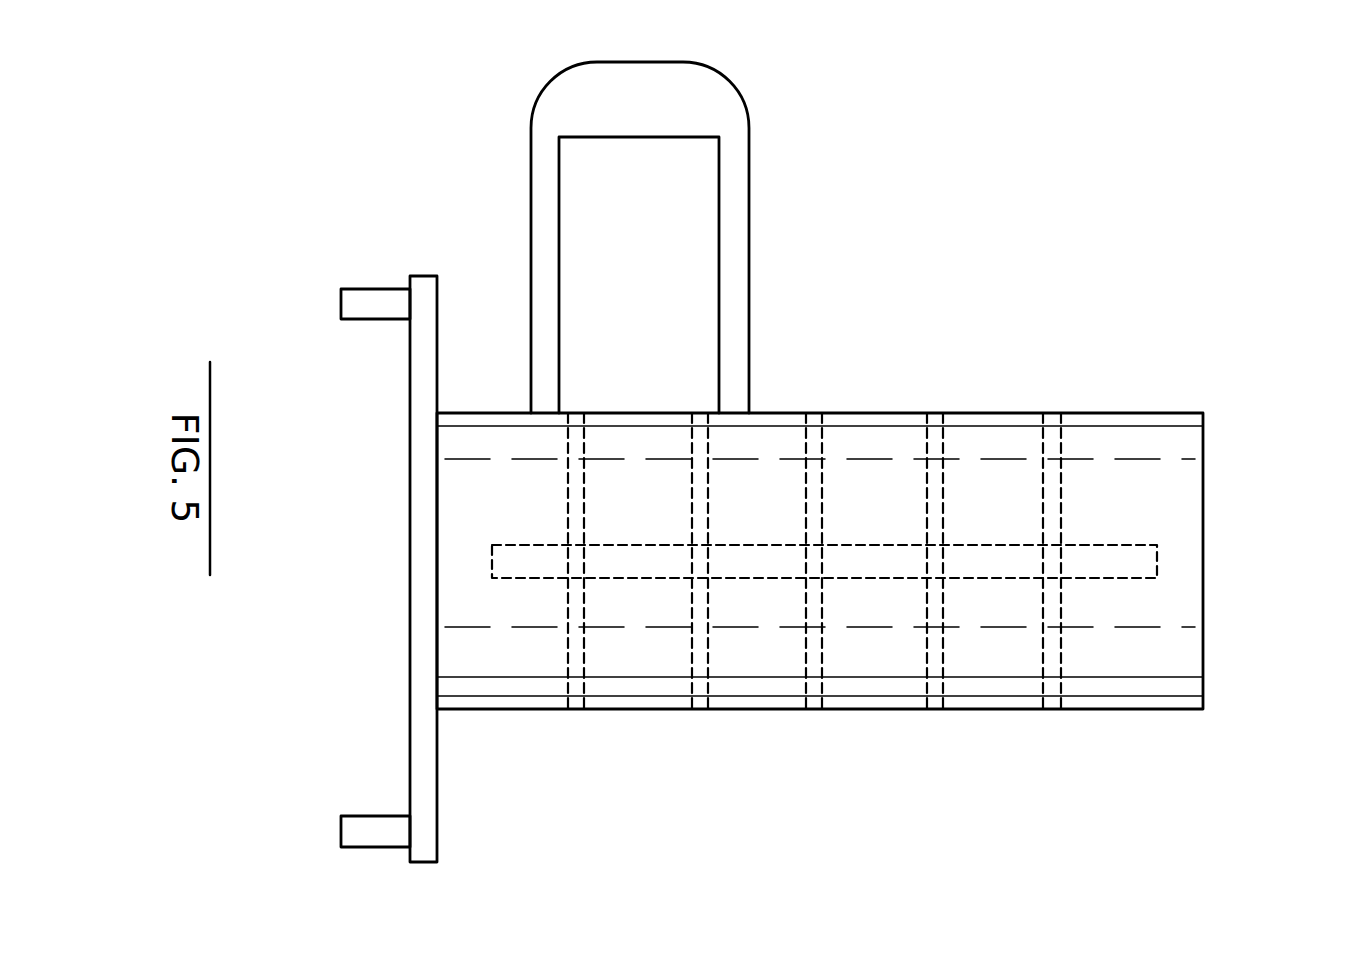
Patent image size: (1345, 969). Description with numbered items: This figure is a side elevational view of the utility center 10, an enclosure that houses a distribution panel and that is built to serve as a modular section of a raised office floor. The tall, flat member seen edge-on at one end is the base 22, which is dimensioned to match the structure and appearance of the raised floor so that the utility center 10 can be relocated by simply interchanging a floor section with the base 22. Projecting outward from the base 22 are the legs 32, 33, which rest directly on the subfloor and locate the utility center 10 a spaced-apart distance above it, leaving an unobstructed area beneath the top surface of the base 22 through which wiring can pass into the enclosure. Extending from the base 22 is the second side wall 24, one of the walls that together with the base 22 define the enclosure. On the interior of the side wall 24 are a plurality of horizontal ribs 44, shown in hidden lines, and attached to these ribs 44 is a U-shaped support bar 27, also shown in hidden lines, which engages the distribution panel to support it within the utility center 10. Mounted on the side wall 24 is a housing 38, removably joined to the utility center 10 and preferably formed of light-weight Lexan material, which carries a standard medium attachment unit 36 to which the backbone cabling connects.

The utility center 10 is at (1250, 313).
The base 22 is at (428, 777).
The second side wall 24 is at (1165, 690).
The U-shaped support bar 27 is at (1160, 572).
The leg 32 is at (353, 300).
The leg 33 is at (383, 835).
The medium attachment unit 36 is at (610, 243).
The housing 38 is at (655, 77).
The horizontal ribs 44 is at (1043, 444).